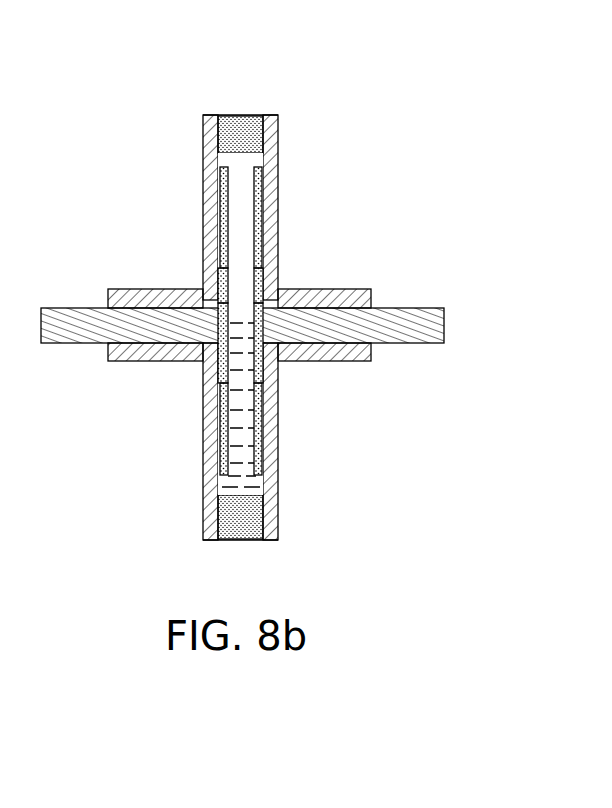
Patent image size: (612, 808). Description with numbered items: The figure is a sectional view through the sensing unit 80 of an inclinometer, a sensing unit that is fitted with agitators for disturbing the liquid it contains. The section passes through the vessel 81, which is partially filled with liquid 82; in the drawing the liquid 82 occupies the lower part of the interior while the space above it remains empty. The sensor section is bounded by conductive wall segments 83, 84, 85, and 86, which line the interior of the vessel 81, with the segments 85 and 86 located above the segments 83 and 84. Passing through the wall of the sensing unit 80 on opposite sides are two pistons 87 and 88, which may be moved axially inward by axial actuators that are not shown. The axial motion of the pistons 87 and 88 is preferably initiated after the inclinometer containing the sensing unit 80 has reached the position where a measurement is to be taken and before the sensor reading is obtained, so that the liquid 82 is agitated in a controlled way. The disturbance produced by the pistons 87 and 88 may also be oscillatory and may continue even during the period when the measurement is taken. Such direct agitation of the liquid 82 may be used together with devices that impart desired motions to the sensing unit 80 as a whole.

The sensing unit 80 is at (273, 82).
The vessel 81 is at (240, 210).
The liquid 82 is at (246, 437).
The conductive wall segment 83 is at (260, 402).
The conductive wall segment 84 is at (222, 423).
The conductive wall segment 85 is at (258, 243).
The conductive wall segment 86 is at (222, 243).
The piston 87 is at (50, 320).
The piston 88 is at (424, 320).